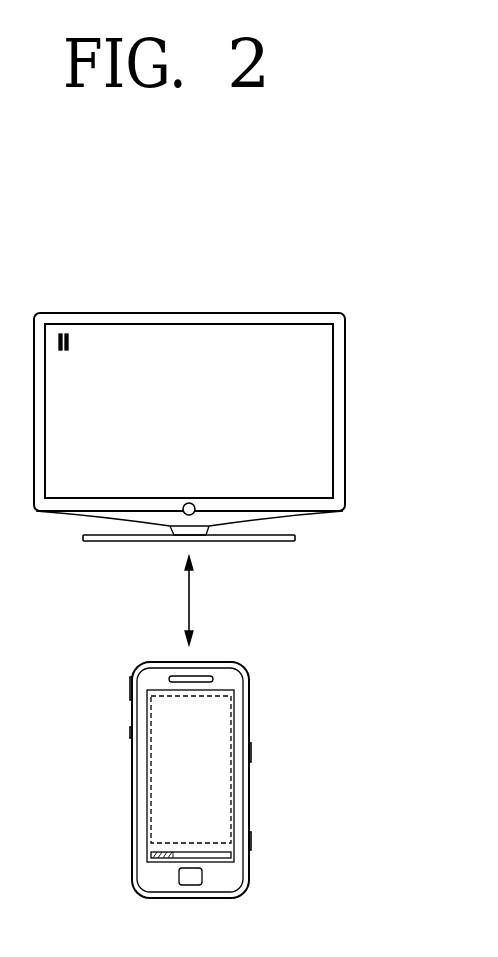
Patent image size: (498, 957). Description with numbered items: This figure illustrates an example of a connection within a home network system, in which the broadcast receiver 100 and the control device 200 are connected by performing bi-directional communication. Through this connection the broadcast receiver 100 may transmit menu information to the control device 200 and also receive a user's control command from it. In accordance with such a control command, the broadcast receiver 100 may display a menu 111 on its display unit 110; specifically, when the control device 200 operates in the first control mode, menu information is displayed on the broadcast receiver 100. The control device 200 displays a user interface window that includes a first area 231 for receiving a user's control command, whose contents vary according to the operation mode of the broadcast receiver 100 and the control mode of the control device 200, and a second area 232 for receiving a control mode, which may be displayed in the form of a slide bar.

The broadcast receiver 100 is at (295, 312).
The display unit 110 is at (325, 413).
The menu 111 is at (61, 314).
The control device 200 is at (132, 765).
The first area 231 is at (233, 725).
The second area 232 is at (229, 855).